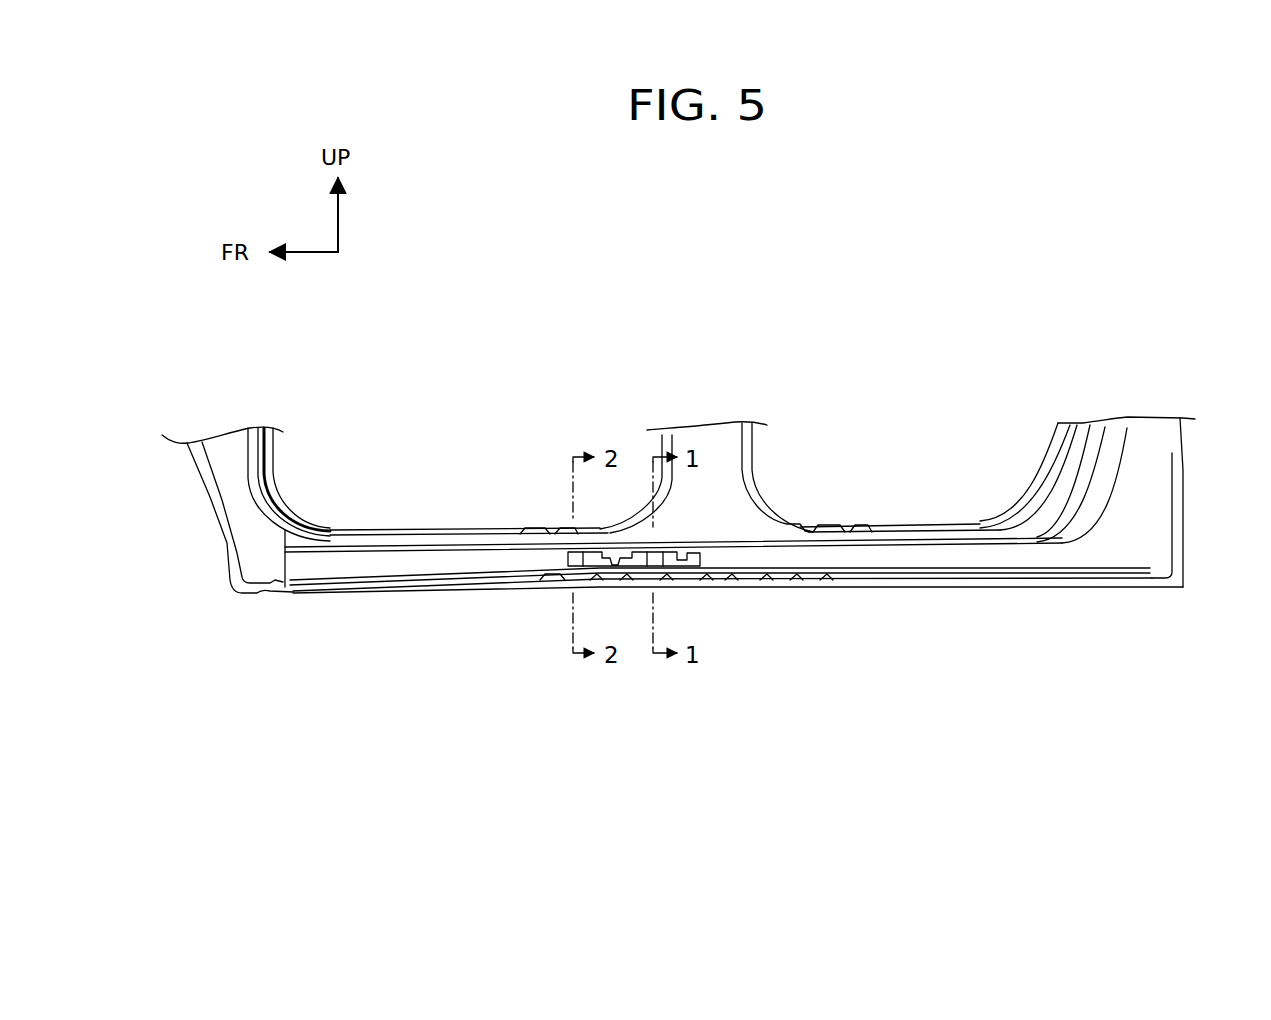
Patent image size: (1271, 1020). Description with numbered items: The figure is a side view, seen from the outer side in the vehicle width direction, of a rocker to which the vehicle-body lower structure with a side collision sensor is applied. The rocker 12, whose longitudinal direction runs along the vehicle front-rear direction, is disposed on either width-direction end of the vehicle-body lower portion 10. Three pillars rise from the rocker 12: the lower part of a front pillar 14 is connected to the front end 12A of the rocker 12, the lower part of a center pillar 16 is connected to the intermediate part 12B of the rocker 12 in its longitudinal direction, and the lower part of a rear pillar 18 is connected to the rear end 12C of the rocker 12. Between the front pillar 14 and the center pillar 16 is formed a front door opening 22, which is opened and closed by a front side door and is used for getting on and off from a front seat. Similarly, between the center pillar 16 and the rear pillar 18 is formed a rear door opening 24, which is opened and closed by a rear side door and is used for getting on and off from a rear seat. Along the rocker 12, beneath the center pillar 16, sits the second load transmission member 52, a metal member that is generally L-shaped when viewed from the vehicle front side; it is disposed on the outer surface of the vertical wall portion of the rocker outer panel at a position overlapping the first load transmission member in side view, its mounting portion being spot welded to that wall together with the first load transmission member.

The vehicle-body lower portion 10 is at (929, 648).
The rocker 12 is at (441, 592).
The front end 12A is at (310, 565).
The intermediate part 12B is at (717, 557).
The rear end 12C is at (1122, 550).
The front pillar 14 is at (228, 448).
The center pillar 16 is at (712, 442).
The rear pillar 18 is at (1150, 437).
The front door opening 22 is at (474, 455).
The rear door opening 24 is at (942, 452).
The second load transmission member 52 is at (696, 549).